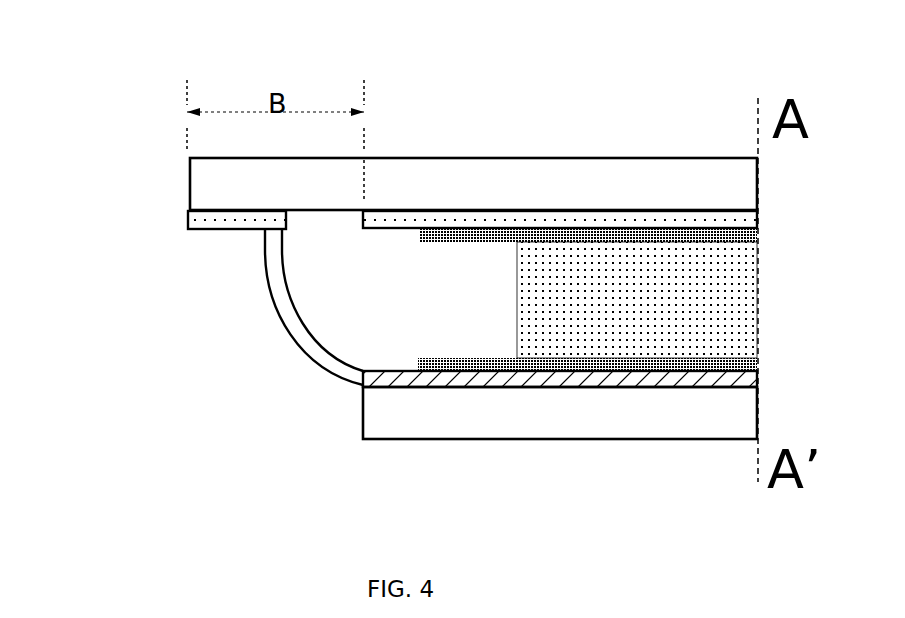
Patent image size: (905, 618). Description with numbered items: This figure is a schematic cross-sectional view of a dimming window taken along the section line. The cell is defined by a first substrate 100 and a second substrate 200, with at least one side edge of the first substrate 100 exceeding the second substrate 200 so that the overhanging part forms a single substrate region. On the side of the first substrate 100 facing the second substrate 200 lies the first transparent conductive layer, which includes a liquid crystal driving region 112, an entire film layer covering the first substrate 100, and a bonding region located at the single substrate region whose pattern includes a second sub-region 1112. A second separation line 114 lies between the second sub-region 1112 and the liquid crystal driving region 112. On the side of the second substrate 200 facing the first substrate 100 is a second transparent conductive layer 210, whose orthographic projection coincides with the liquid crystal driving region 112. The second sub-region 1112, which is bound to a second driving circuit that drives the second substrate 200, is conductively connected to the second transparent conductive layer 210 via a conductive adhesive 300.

The first substrate 100 is at (700, 187).
The second sub-region 1112 is at (223, 210).
The liquid crystal driving region 112 is at (393, 229).
The second separation line 114 is at (338, 219).
The conductive adhesive 300 is at (283, 325).
The second substrate 200 is at (390, 417).
The second transparent conductive layer 210 is at (738, 383).